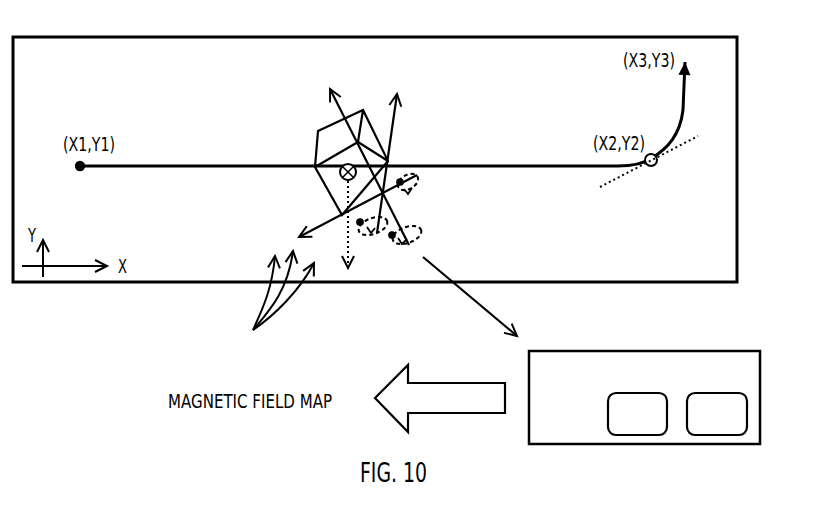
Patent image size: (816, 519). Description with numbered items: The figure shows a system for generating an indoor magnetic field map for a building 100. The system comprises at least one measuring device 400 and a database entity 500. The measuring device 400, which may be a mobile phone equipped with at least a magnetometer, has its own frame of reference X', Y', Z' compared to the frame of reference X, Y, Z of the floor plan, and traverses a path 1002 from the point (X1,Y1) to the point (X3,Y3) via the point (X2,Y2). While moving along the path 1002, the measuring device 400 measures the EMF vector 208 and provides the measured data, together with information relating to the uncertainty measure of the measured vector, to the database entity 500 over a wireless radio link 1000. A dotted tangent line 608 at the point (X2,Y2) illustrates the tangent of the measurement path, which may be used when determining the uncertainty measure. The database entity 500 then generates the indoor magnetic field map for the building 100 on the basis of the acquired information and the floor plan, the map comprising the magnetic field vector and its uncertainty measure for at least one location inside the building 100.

The building 100 is at (77, 59).
The measuring device 400 is at (313, 132).
The path 1002 is at (492, 166).
The tangent direction line 608 is at (608, 182).
The EMF vector 208 is at (260, 320).
The wireless radio link 1000 is at (490, 310).
The database entity 500 is at (644, 397).